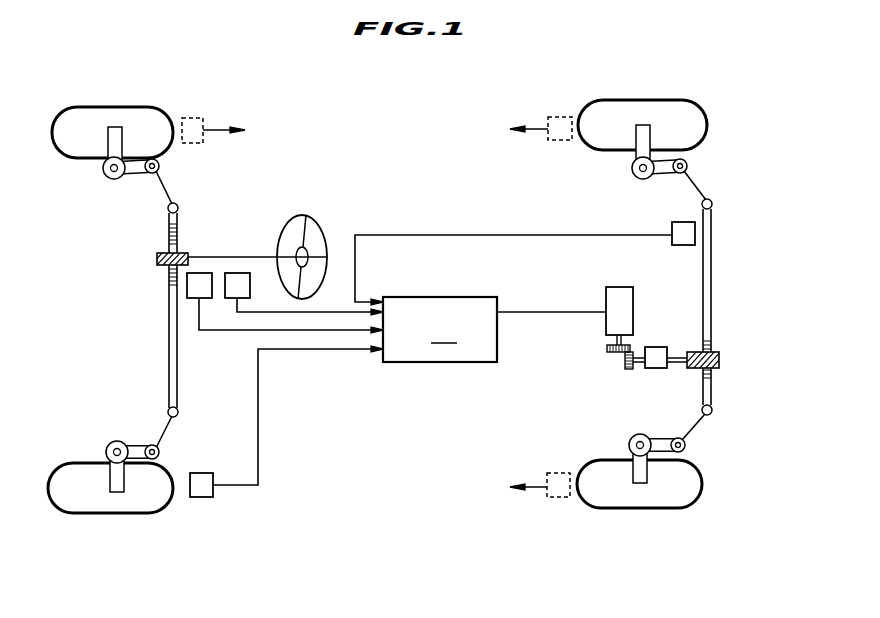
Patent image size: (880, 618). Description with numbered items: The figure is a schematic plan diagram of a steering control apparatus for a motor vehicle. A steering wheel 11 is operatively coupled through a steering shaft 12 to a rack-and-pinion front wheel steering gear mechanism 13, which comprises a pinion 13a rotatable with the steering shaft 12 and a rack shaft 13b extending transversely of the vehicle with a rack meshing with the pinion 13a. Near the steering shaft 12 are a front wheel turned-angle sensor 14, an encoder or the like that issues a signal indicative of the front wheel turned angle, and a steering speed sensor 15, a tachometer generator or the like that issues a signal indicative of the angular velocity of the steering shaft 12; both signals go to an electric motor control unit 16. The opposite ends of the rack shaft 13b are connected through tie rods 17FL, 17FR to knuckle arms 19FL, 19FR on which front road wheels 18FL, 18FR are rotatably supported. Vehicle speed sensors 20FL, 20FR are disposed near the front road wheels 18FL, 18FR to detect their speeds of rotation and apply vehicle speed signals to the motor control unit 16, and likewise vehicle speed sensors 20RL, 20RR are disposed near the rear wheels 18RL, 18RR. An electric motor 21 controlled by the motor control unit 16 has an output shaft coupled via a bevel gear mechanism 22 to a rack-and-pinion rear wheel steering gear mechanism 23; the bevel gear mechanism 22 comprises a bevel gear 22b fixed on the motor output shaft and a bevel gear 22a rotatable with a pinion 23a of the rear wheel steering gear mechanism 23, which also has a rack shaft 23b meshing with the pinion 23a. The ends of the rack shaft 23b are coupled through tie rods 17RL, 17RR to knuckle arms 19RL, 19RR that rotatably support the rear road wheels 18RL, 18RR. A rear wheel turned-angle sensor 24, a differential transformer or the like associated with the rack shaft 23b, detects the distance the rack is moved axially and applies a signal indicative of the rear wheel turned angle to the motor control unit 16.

The steering wheel 11 is at (323, 225).
The steering shaft 12 is at (257, 255).
The front wheel steering gear mechanism 13 is at (152, 268).
The pinion 13a is at (176, 250).
The rack shaft 13b is at (169, 372).
The front wheel turned-angle sensor 14 is at (235, 299).
The steering speed sensor 15 is at (193, 299).
The motor control unit 16 is at (440, 329).
The tie rod 17FR is at (165, 188).
The tie rod 17FL is at (165, 433).
The tie rod 17RR is at (700, 185).
The tie rod 17RL is at (700, 425).
The front road wheel 18FR is at (90, 115).
The front road wheel 18FL is at (112, 510).
The rear road wheel 18RR is at (680, 110).
The rear road wheel 18RL is at (673, 500).
The knuckle arm 19FR is at (137, 173).
The knuckle arm 19FL is at (140, 446).
The knuckle arm 19RR is at (670, 173).
The knuckle arm 19RL is at (665, 452).
The vehicle speed sensor 20FR is at (200, 117).
The vehicle speed sensor 20FL is at (203, 498).
The vehicle speed sensor 20RR is at (558, 117).
The vehicle speed sensor 20RL is at (553, 498).
The electric motor 21 is at (617, 288).
The bevel gear mechanism 22 is at (608, 362).
The bevel gear 22a is at (629, 371).
The bevel gear 22b is at (606, 347).
The rear wheel steering gear mechanism 23 is at (724, 360).
The pinion 23a is at (713, 351).
The rack shaft 23b is at (713, 258).
The rear wheel turned-angle sensor 24 is at (682, 246).